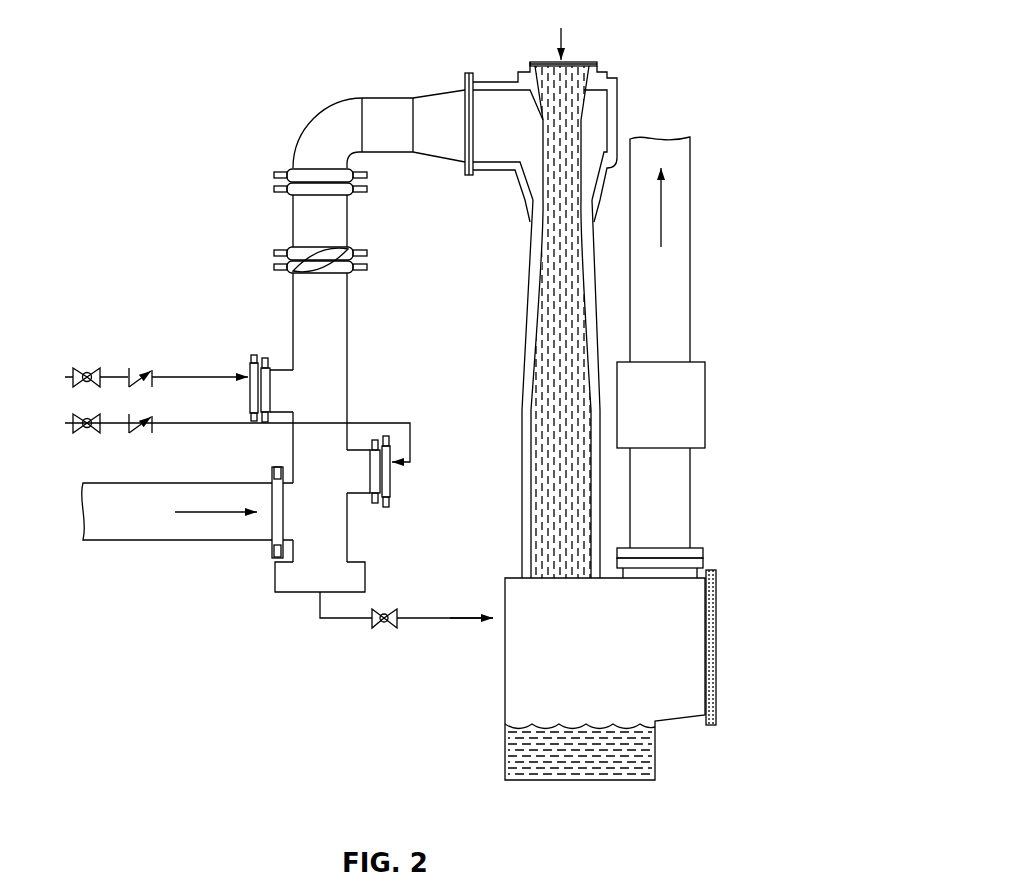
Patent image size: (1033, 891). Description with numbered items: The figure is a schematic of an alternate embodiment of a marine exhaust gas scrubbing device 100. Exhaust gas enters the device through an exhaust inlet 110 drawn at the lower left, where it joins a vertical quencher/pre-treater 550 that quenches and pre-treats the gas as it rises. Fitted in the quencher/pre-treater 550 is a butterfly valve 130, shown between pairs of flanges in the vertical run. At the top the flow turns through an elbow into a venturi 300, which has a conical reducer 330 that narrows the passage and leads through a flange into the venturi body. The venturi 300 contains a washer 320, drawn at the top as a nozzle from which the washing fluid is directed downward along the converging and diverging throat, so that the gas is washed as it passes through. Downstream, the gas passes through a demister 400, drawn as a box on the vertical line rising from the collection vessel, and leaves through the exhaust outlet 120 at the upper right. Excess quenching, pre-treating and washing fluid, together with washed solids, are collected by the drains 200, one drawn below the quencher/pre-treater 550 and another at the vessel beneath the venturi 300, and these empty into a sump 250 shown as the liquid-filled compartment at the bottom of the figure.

The marine exhaust gas scrubbing device 100 is at (200, 616).
The exhaust inlet 110 is at (85, 520).
The exhaust outlet 120 is at (675, 138).
The butterfly valve 130 is at (290, 257).
The drains 200 is at (307, 592).
The sump 250 is at (617, 767).
The venturi 300 is at (490, 78).
The washer 320 is at (583, 65).
The conical reducer 330 is at (388, 102).
The demister 400 is at (692, 407).
The quencher/pre-treater 550 is at (300, 337).